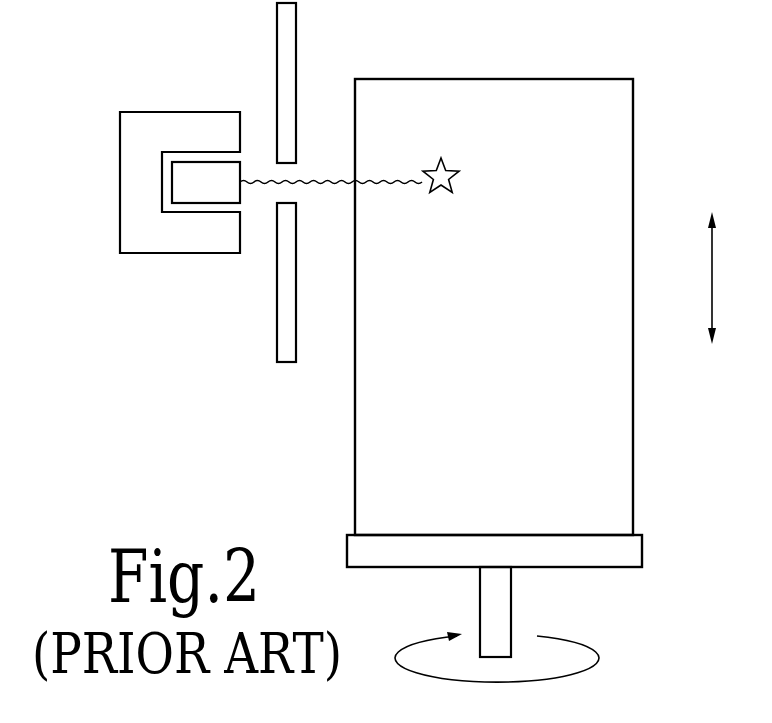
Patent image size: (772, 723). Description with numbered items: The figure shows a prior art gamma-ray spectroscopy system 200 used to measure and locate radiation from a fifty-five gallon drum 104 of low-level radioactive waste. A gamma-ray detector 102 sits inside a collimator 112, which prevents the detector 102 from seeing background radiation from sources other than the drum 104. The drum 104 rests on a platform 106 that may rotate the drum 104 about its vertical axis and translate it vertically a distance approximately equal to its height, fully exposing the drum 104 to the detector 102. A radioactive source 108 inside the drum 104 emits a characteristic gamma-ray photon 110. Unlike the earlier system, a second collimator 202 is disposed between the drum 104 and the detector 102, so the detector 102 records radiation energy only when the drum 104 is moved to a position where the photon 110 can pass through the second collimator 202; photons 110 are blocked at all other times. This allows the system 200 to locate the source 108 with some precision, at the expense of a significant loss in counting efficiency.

The prior art gamma-ray spectroscopy system 200 is at (191, 429).
The gamma-ray detector 102 is at (227, 194).
The 55-gallon drum 104 is at (636, 126).
The platform 106 is at (643, 548).
The radioactive source 108 is at (436, 169).
The gamma-ray photon 110 is at (322, 187).
The collimator 112 is at (155, 120).
The second collimator 202 is at (277, 335).